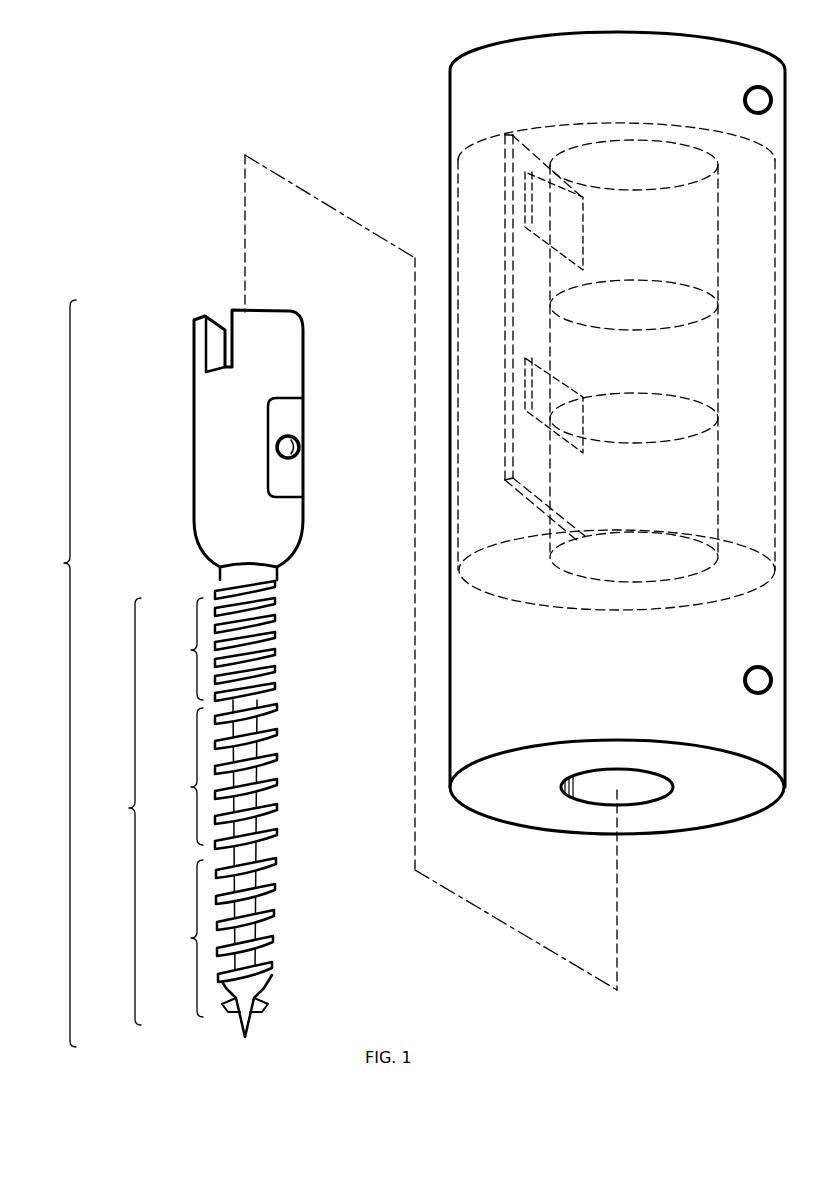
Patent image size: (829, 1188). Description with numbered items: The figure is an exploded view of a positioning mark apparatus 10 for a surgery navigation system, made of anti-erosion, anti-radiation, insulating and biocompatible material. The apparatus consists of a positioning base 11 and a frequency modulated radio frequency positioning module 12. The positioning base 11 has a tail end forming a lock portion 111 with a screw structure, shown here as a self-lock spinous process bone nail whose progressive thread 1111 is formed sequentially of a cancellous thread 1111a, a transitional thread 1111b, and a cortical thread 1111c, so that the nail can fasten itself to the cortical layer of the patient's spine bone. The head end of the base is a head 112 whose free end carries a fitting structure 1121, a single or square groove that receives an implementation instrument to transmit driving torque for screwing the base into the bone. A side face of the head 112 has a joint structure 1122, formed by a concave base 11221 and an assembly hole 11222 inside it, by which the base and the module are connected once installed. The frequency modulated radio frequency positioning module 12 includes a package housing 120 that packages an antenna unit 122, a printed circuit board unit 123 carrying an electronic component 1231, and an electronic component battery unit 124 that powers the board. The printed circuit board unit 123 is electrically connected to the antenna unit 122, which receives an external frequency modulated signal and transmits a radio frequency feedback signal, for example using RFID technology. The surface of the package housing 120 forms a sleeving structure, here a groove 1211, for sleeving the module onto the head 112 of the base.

The positioning mark apparatus 10 is at (211, 116).
The positioning base 11 is at (222, 656).
The lock portion 111 is at (280, 680).
The progressive thread 1111 is at (144, 811).
The cancellous thread 1111a is at (171, 649).
The transitional thread 1111b is at (171, 776).
The cortical thread 1111c is at (171, 938).
The head 112 is at (306, 377).
The fitting structure 1121 is at (224, 330).
The joint structure 1122 is at (302, 423).
The concave base 11221 is at (294, 412).
The assembly hole 11222 is at (300, 444).
The frequency modulated radio frequency positioning module 12 is at (443, 100).
The package housing 120 is at (452, 226).
The groove 1211 is at (635, 790).
The antenna unit 122 is at (640, 138).
The printed circuit board unit 123 is at (572, 350).
The electronic component 1231 is at (590, 378).
The electronic component battery unit 124 is at (668, 494).